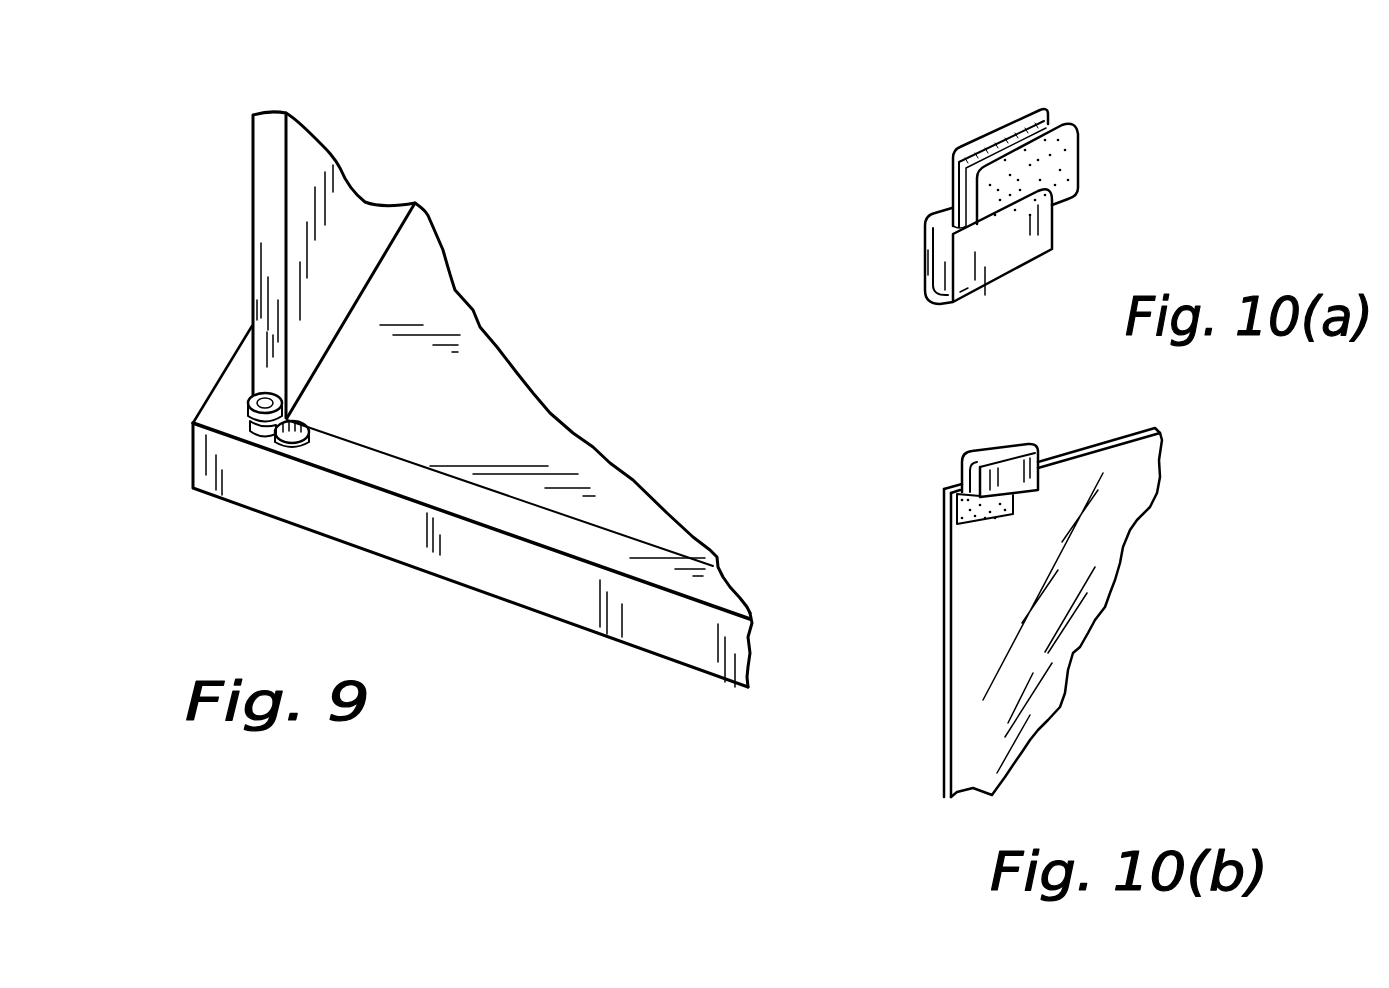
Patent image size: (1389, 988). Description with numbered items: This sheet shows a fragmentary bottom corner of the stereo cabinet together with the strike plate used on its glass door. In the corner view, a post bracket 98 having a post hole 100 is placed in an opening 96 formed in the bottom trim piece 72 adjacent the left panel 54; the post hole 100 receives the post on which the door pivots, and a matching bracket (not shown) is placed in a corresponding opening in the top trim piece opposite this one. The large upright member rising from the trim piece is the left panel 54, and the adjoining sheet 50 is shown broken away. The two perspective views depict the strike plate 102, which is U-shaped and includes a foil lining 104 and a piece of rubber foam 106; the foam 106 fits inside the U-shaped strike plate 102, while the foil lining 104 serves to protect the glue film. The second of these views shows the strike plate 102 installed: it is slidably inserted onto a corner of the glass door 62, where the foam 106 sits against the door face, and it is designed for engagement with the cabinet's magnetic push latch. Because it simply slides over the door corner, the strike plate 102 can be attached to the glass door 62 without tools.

In FIG. 9, the glass panel 50 is at (512, 381).
In FIG. 9, the left panel 54 is at (350, 193).
In FIG. 9, the bottom trim piece 72 is at (517, 593).
In FIG. 9, the opening 96 is at (317, 427).
In FIG. 9, the post bracket 98 is at (250, 416).
In FIG. 9, the post hole 100 is at (263, 395).
In FIG. 10A, the strike plate 102 is at (1037, 237).
In FIG. 10B, the strike plate 102 is at (1012, 447).
In FIG. 10A, the foil lining 104 is at (1047, 118).
In FIG. 10A, the rubber foam 106 is at (1070, 163).
In FIG. 10B, the rubber foam 106 is at (957, 494).
In FIG. 10B, the glass door 62 is at (1015, 588).